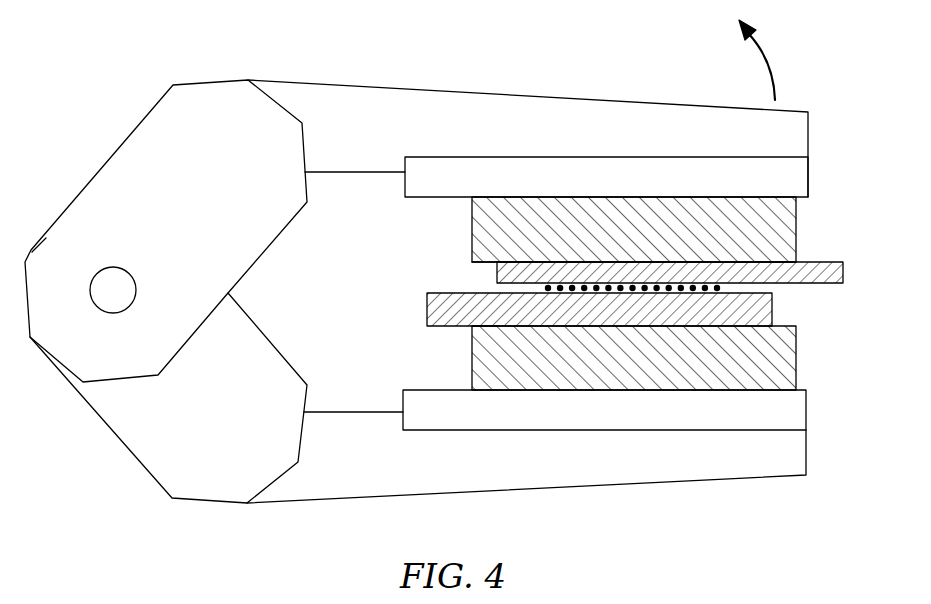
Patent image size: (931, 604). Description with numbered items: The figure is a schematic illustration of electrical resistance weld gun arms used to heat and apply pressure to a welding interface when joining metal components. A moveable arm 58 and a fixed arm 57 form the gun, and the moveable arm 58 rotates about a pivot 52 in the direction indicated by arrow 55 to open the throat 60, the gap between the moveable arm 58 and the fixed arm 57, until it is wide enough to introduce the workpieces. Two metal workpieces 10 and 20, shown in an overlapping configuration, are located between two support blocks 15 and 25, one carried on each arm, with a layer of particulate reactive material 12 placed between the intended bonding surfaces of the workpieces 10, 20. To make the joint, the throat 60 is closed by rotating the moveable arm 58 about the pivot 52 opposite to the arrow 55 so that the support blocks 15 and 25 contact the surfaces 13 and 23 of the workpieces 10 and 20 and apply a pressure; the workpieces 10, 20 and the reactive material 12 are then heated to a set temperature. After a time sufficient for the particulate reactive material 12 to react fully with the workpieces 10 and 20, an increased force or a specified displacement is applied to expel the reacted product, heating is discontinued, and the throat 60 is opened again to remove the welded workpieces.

The metal workpiece 10 is at (805, 272).
The particulate reactive material 12 is at (717, 288).
The surface of workpiece 13 is at (527, 258).
The support block 15 is at (718, 227).
The metal workpiece 20 is at (763, 309).
The surface of workpiece 23 is at (495, 327).
The support block 25 is at (595, 373).
The pivot 52 is at (115, 268).
The arrow 55 is at (773, 68).
The fixed arm 57 is at (518, 460).
The moveable arm 58 is at (470, 112).
The throat 60 is at (731, 261).